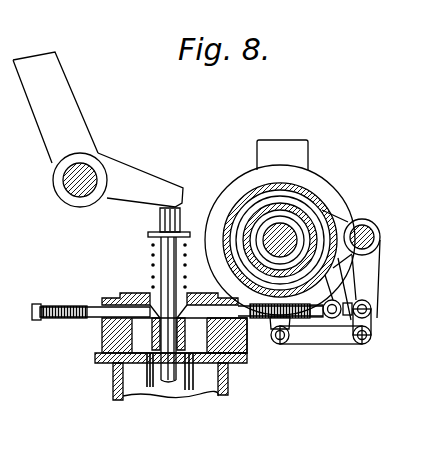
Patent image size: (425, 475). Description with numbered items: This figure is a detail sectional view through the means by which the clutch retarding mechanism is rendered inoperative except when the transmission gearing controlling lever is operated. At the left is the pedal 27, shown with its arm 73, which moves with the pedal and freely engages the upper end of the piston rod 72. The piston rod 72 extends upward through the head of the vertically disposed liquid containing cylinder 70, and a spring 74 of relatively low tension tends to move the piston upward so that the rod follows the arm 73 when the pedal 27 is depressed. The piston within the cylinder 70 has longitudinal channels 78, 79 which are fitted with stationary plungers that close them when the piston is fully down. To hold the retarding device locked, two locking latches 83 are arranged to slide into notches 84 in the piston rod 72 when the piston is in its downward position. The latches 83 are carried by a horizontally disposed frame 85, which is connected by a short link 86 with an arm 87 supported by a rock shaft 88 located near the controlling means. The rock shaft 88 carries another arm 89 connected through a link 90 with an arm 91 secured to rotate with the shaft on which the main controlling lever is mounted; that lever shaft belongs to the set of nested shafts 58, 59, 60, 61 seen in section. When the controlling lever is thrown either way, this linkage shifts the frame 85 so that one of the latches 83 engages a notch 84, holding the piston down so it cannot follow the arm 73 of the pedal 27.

The pedal 27 is at (75, 123).
The arm 73 is at (138, 182).
The piston rod 72 is at (161, 245).
The spring 74 is at (150, 263).
The liquid containing cylinder 70 is at (113, 393).
The notches 84 is at (150, 300).
The locking latches 83 is at (238, 342).
The frame 85 is at (48, 320).
The channel 79 is at (149, 388).
The channel 78 is at (190, 392).
The nested shaft 59 is at (236, 220).
The nested shaft 58 is at (237, 210).
The nested shaft 60 is at (256, 208).
The nested shaft 61 is at (290, 228).
The rock shaft 88 is at (366, 232).
The arm 87 is at (374, 290).
The arm 89 is at (376, 320).
The link 90 is at (312, 335).
The short link 86 is at (346, 314).
The arm 91 is at (266, 320).